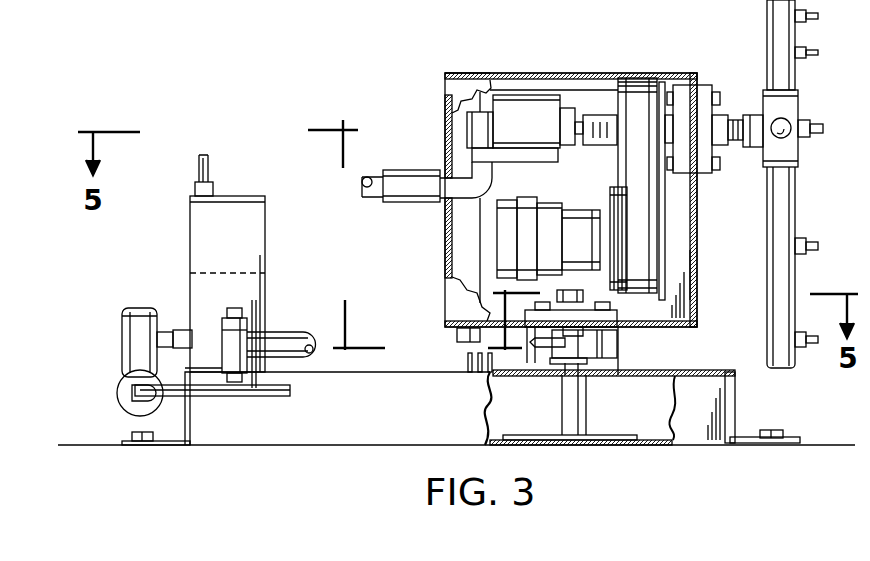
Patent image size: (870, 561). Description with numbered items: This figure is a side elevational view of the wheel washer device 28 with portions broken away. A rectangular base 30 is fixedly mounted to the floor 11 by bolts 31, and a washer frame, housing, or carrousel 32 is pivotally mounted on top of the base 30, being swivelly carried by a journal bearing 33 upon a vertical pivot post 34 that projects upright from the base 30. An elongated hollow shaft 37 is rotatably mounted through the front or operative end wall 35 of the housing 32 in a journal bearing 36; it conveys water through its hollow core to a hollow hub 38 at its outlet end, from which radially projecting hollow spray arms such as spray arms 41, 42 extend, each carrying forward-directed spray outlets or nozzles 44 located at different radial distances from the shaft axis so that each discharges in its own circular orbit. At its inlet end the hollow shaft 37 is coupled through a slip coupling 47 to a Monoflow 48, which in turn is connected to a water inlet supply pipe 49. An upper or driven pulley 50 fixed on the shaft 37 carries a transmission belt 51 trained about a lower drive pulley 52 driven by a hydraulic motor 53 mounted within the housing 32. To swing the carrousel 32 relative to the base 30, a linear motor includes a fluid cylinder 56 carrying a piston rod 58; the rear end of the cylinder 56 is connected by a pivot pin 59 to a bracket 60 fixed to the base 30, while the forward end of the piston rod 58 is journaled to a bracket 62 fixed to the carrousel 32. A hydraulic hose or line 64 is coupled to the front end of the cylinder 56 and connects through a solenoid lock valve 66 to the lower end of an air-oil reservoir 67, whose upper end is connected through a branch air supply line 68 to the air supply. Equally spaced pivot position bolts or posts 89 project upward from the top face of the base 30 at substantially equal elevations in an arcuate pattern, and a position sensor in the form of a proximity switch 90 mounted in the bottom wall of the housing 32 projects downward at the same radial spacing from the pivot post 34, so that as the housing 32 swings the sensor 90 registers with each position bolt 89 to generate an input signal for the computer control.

The floor 11 is at (827, 443).
The wheel washer device 28 is at (416, 82).
The rectangular base 30 is at (378, 418).
The bolts 31 is at (778, 430).
The washer frame, housing, or carrousel 32 is at (541, 73).
The journal bearing 33 is at (612, 319).
The vertical pivot post 34 is at (574, 416).
The front or operative end wall of the housing 35 is at (696, 276).
The journal bearing 36 is at (705, 92).
The elongated hollow shaft 37 is at (736, 138).
The hollow hub 38 is at (791, 102).
The spray arm 41 is at (789, 206).
The spray arm 42 is at (787, 136).
The spray outlets or nozzles 44 is at (803, 246).
The slip coupling 47 is at (593, 118).
The Monoflow 48 is at (534, 135).
The water inlet supply pipe 49 is at (377, 184).
The upper or driven pulley 50 is at (622, 92).
The transmission belt 51 is at (640, 161).
The lower drive pulley 52 is at (663, 236).
The hydraulic motor 53 is at (602, 212).
The fluid cylinder 56 is at (287, 340).
The piston rod 58 is at (548, 350).
The pivot pin 59 is at (238, 312).
The bracket 60 is at (222, 320).
The bracket 62 is at (592, 360).
The liquid or hydraulic hose or line 64 is at (228, 393).
The solenoid lock valve 66 is at (135, 334).
The air-oil reservoir 67 is at (234, 236).
The branch air supply line 68 is at (208, 172).
The pivot position bolts or posts 89 is at (488, 376).
The position sensor or proximity switch 90 is at (458, 336).